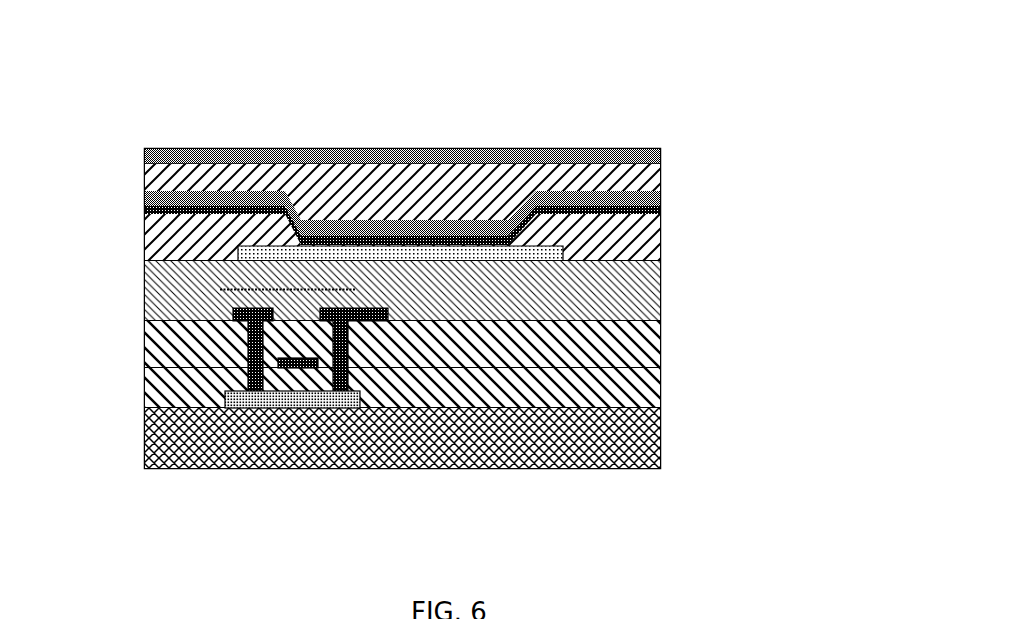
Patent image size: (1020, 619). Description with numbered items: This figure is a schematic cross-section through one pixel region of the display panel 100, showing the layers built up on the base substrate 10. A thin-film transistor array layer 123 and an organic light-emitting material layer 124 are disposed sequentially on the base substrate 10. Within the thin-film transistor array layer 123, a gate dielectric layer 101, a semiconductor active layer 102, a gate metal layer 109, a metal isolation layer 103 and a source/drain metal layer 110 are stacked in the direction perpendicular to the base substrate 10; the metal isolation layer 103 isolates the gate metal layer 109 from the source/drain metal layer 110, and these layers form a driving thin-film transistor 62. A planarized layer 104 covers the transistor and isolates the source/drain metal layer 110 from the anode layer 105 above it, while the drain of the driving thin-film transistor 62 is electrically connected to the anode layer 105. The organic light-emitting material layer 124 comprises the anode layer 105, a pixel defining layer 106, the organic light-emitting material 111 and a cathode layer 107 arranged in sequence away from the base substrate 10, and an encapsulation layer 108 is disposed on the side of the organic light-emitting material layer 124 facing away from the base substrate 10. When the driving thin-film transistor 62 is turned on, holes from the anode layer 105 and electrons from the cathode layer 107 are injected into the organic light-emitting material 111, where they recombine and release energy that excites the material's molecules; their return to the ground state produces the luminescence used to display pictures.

The array substrate 100 is at (631, 22).
The cathode layer 107 is at (455, 164).
The pixel defining layer 106 is at (455, 212).
The encapsulation layer 108 is at (135, 143).
The organic light-emitting material 111 is at (455, 219).
The anode layer 105 is at (502, 266).
The organic light-emitting material layer 124 is at (755, 130).
The planarized layer 104 is at (455, 290).
The source/drain metal layer 110 is at (203, 290).
The metal isolation layer 103 is at (455, 341).
The gate dielectric layer 101 is at (455, 381).
The driving thin-film transistor 62 is at (402, 472).
The base substrate 10 is at (447, 433).
The thin-film transistor array layer 123 is at (138, 298).
The gate metal layer 109 is at (353, 438).
The semiconductor active layer 102 is at (292, 459).